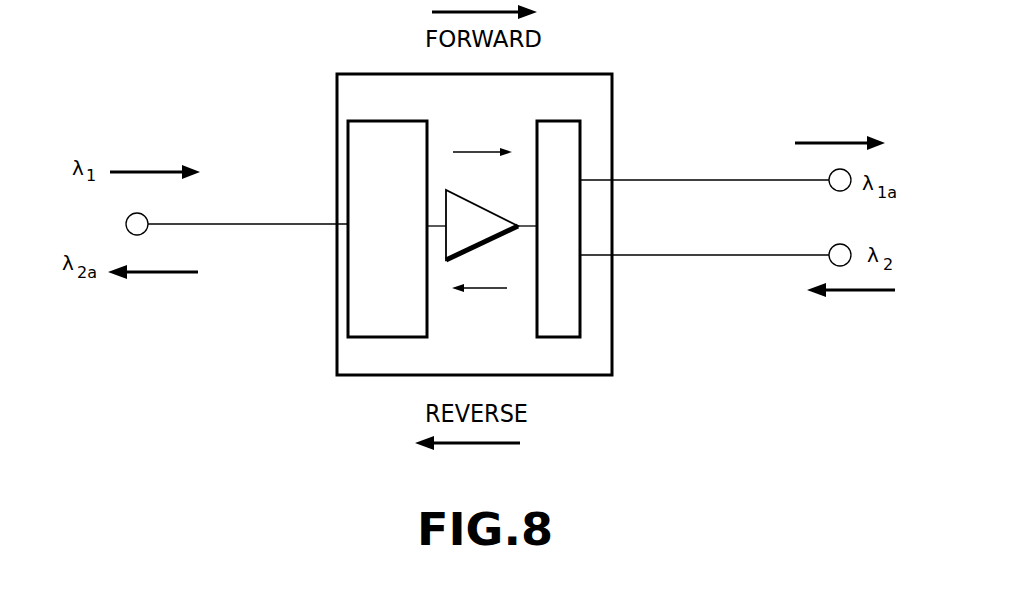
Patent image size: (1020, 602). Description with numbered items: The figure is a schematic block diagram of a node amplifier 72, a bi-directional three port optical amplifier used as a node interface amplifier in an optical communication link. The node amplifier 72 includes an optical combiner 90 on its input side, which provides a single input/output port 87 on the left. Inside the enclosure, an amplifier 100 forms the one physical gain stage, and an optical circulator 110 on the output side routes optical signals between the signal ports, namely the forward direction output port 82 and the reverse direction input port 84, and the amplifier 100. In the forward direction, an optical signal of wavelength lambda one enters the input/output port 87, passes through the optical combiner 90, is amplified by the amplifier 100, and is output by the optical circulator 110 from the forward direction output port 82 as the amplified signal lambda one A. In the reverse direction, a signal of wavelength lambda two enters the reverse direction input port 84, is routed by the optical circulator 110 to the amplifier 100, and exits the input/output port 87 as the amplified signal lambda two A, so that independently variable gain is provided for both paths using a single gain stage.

The node amplifier 72 is at (563, 74).
The optical combiner 90 is at (376, 121).
The optical circulator 110 is at (558, 121).
The amplifier 100 is at (475, 202).
The input/output port 87 is at (232, 223).
The forward direction output port 82 is at (667, 179).
The reverse direction input port 84 is at (667, 254).